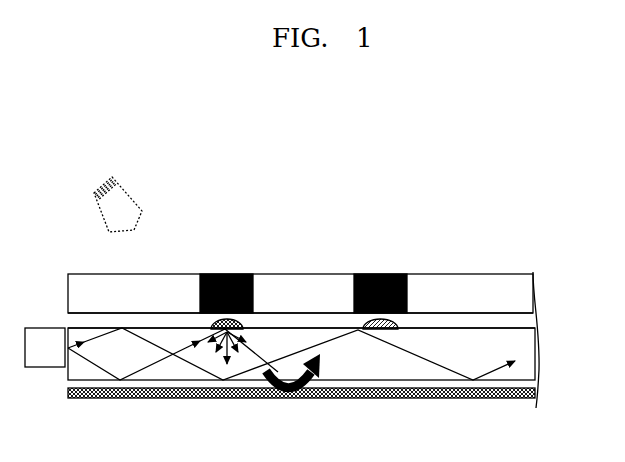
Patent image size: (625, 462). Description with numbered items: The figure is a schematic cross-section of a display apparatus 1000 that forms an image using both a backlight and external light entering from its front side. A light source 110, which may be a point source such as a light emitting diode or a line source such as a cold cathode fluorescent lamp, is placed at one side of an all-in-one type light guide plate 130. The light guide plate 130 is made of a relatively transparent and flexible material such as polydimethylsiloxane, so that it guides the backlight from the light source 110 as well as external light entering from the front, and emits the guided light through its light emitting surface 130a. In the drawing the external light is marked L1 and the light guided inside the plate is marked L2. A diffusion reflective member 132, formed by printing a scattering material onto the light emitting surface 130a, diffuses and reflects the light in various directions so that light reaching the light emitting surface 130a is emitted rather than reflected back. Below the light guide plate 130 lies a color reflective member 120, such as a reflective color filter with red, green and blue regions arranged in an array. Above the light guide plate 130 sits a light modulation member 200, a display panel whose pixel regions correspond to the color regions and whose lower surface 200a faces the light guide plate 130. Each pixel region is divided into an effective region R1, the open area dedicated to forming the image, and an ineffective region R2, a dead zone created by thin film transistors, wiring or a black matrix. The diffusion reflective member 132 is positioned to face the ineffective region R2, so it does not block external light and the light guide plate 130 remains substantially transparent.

The display apparatus 1000 is at (486, 184).
The light source 110 is at (43, 367).
The color reflective member 120 is at (557, 385).
The light guide plate 130 is at (331, 357).
The light emitting surface 130a is at (467, 328).
The diffusion reflective member 132 is at (398, 319).
The light modulation member 200 is at (557, 274).
The lower surface of display panel 200a is at (503, 313).
The effective region R1 is at (352, 270).
The ineffective region R2 is at (405, 270).
The external light L1 is at (128, 197).
The guided light L2 is at (103, 354).